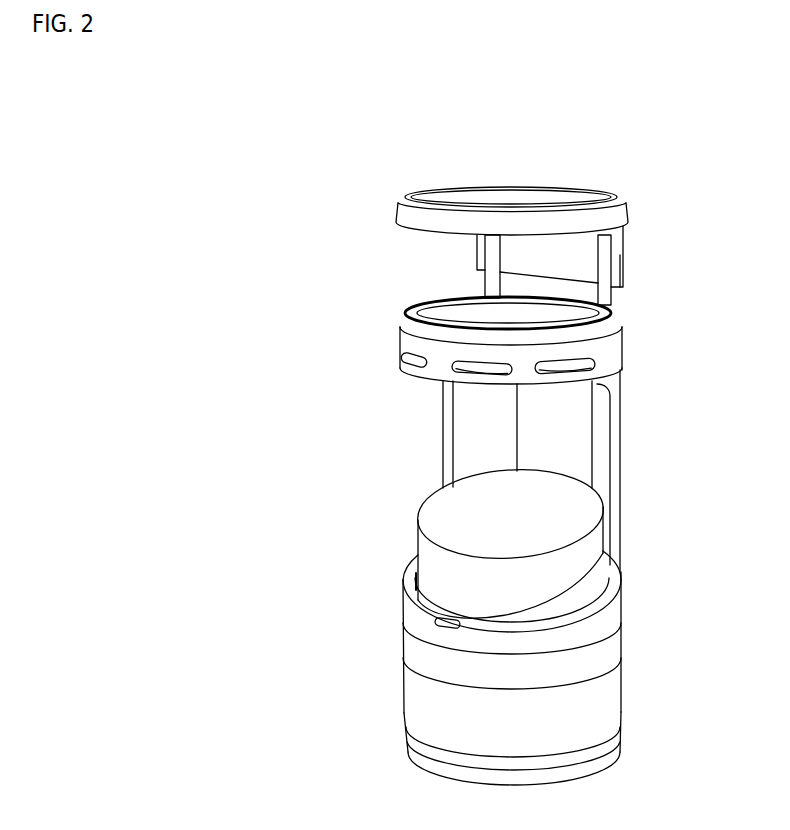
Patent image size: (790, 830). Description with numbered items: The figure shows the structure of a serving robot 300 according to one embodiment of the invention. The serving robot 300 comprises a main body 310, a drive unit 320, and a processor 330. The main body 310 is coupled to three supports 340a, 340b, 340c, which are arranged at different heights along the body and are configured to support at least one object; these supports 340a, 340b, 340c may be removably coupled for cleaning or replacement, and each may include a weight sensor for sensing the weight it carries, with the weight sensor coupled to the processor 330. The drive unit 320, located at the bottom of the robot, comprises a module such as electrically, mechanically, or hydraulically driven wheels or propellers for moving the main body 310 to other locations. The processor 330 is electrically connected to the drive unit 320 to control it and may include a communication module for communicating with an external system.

The serving robot 300 is at (353, 103).
The main body 310 is at (647, 194).
The drive unit 320 is at (430, 773).
The processor 330 is at (427, 686).
The support 340a is at (458, 196).
The support 340b is at (448, 318).
The support 340c is at (442, 511).